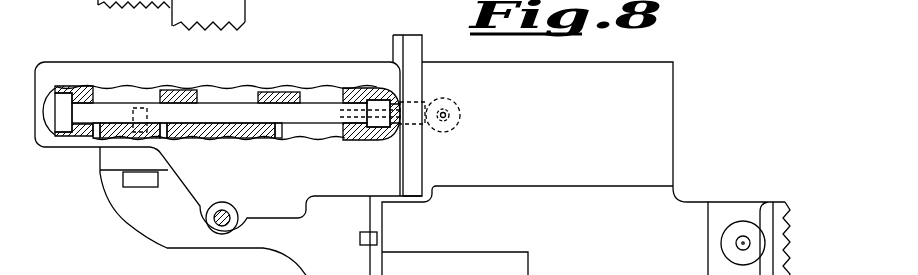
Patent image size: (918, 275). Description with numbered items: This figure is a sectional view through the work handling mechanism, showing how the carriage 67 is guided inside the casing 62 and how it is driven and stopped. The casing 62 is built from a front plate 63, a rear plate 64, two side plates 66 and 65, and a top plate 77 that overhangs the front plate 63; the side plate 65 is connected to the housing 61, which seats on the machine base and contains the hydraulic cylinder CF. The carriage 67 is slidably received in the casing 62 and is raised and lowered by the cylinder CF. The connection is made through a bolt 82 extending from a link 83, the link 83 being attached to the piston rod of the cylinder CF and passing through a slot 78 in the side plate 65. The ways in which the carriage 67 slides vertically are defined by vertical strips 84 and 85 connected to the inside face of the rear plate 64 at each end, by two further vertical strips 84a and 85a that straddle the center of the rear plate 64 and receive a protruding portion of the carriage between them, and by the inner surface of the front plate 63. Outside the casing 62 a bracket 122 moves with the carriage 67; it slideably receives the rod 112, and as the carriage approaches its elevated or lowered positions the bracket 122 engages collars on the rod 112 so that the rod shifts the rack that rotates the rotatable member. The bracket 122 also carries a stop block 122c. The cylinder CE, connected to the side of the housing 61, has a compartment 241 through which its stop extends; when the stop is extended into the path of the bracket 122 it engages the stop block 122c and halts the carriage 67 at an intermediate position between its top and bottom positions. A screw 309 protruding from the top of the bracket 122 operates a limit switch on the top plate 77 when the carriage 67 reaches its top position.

The housing 61 is at (675, 92).
The casing 62 is at (97, 64).
The front plate 63 is at (88, 138).
The rear plate 64 is at (288, 100).
The side plate 65 is at (398, 42).
The side plate 66 is at (47, 120).
The carriage 67 is at (163, 108).
The top plate 77 is at (216, 176).
The slot 78 is at (393, 130).
The bolt 82 is at (366, 112).
The link 83 is at (455, 108).
The vertical strip 84 is at (60, 86).
The vertical strip 84a is at (182, 98).
The vertical strip 85 is at (354, 100).
The vertical strip 85a is at (312, 72).
The rod 112 is at (230, 210).
The bracket 122 is at (118, 223).
The stop block 122c is at (360, 238).
The compartment 241 is at (647, 251).
The screw 309 is at (419, 263).
The hydraulic cylinder CF is at (460, 122).
The cylinder CE is at (763, 210).